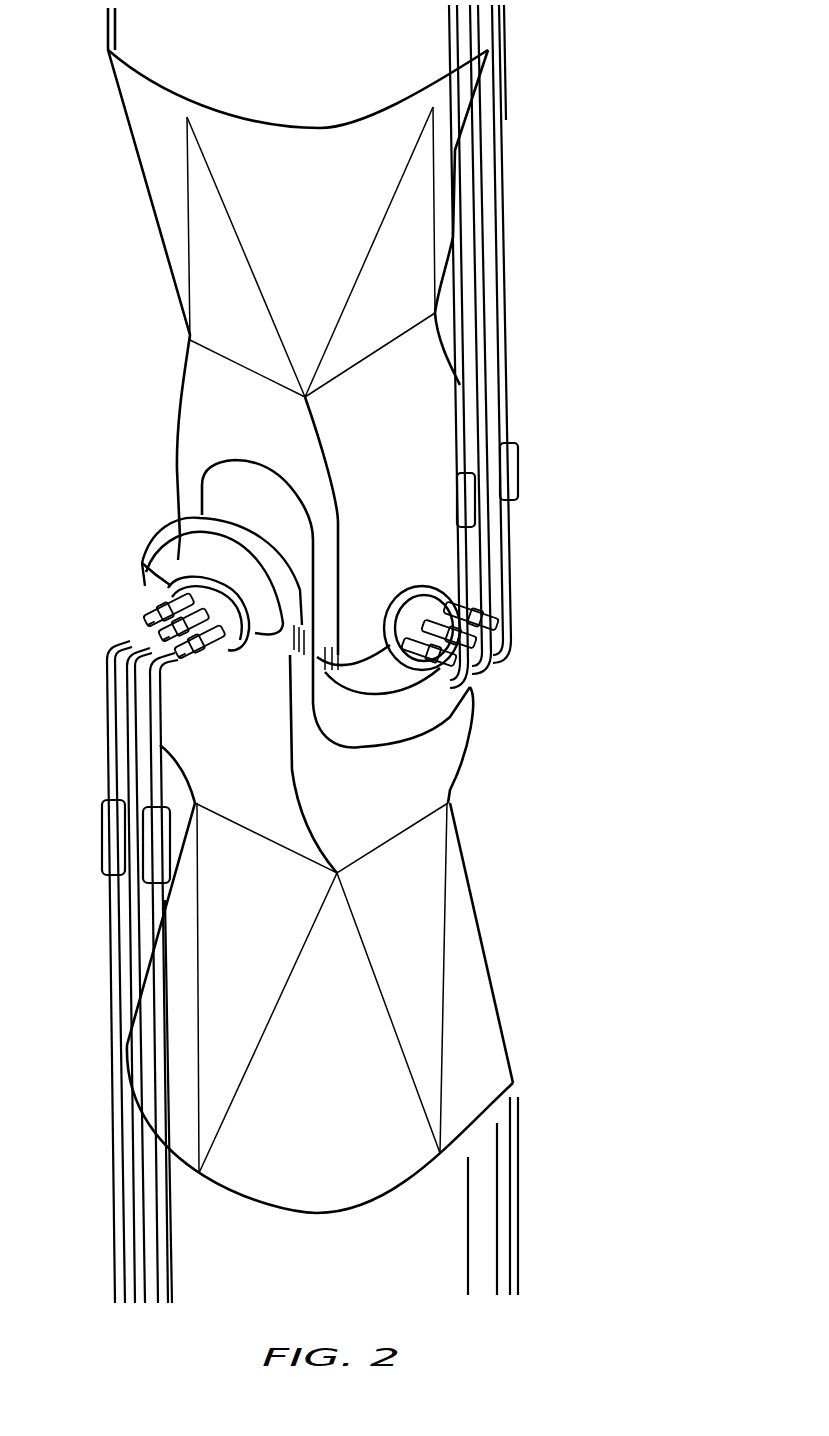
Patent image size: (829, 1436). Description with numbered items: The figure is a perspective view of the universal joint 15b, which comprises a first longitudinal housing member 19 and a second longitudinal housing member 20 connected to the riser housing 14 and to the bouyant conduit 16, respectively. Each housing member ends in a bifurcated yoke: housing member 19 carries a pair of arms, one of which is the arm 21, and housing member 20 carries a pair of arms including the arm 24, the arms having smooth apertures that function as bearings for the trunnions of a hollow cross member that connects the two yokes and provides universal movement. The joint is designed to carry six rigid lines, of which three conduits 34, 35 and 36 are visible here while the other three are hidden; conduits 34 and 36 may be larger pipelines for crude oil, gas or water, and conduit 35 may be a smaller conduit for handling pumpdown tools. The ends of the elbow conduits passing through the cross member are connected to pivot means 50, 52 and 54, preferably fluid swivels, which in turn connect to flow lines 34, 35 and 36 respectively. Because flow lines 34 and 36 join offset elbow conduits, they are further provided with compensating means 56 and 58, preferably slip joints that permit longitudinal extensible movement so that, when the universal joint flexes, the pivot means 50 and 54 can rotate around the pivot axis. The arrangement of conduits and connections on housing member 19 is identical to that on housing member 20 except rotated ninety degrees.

The riser housing 14 is at (467, 1240).
The universal joint 15b is at (628, 440).
The bouyant conduit 16 is at (418, 42).
The first longitudinal housing member 19 is at (470, 964).
The second longitudinal housing member 20 is at (425, 145).
The arm 21 is at (185, 540).
The arm 24 is at (432, 553).
The conduit 34 is at (453, 60).
The conduit 35 is at (482, 236).
The conduit 36 is at (507, 292).
The pivot means 50 is at (183, 667).
The pivot means 52 is at (113, 657).
The pivot means 54 is at (143, 620).
The compensating means 56 is at (466, 493).
The compensating means 58 is at (506, 440).